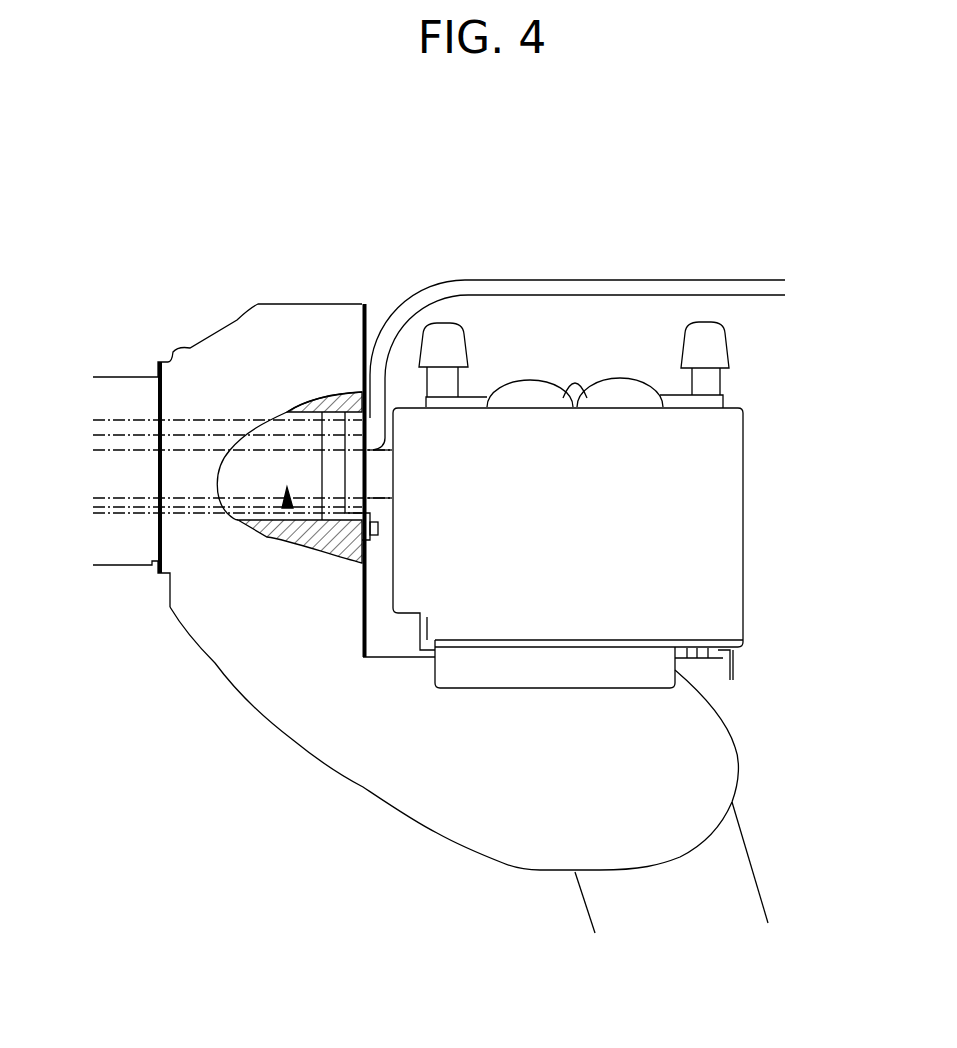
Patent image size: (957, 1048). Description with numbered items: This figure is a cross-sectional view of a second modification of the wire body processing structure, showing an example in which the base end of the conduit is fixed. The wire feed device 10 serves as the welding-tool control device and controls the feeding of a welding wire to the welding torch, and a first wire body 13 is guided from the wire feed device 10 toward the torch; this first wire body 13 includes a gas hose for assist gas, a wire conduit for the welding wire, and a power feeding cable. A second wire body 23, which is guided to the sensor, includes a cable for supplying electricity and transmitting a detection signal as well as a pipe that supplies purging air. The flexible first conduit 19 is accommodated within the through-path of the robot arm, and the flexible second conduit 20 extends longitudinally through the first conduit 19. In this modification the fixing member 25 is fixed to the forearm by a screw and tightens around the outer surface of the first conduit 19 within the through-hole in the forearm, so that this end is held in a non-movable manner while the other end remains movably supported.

The wire feed device 10 is at (763, 460).
The first wire body 13 is at (287, 510).
The first conduit 19 is at (306, 402).
The second conduit 20 is at (378, 493).
The second wire body 23 is at (412, 298).
The fixing member 25 is at (330, 513).